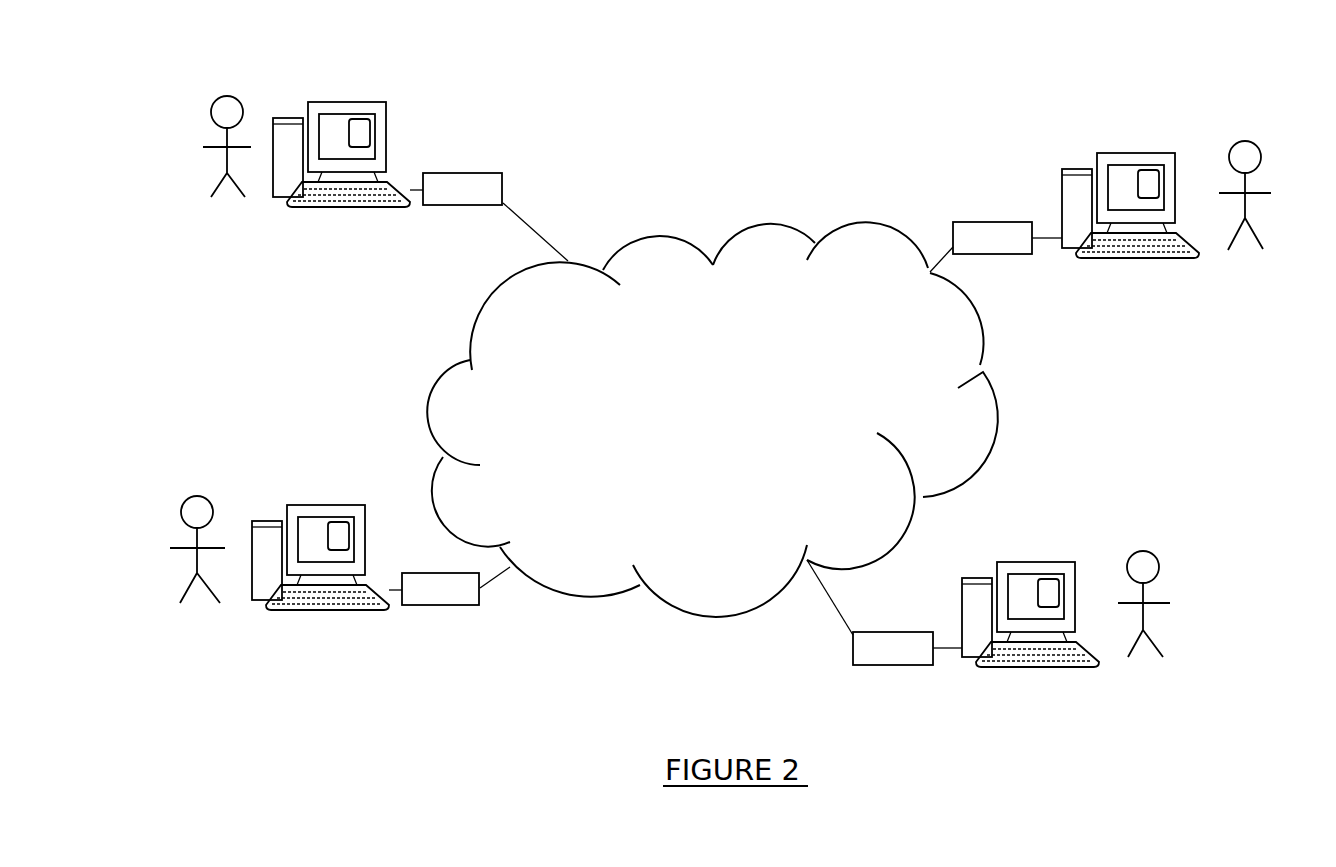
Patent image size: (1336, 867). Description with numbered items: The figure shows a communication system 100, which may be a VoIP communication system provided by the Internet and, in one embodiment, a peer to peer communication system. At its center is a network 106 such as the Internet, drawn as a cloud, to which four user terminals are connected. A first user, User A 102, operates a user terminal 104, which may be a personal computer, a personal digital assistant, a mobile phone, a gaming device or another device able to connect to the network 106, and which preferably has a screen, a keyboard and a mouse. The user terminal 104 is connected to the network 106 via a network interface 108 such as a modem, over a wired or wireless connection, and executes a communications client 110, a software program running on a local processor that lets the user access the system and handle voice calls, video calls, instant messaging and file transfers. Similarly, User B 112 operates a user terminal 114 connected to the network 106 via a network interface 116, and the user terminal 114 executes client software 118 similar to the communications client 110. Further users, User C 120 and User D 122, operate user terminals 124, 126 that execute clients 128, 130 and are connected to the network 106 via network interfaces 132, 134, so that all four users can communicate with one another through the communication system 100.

The communication system 100 is at (927, 62).
The User A 102 is at (1249, 141).
The user terminal 104 is at (1130, 177).
The network 106 is at (694, 416).
The network interface 108 is at (992, 222).
The communications client 110 is at (1151, 167).
The User B 112 is at (188, 496).
The user terminal 114 is at (320, 529).
The network interface 116 is at (443, 605).
The client software 118 is at (342, 520).
The User C 120 is at (222, 96).
The User D 122 is at (1148, 552).
The user terminal 124 is at (341, 126).
The user terminal 126 is at (1030, 586).
The client 128 is at (363, 118).
The client 130 is at (1050, 577).
The network interface 132 is at (465, 173).
The network interface 134 is at (895, 632).